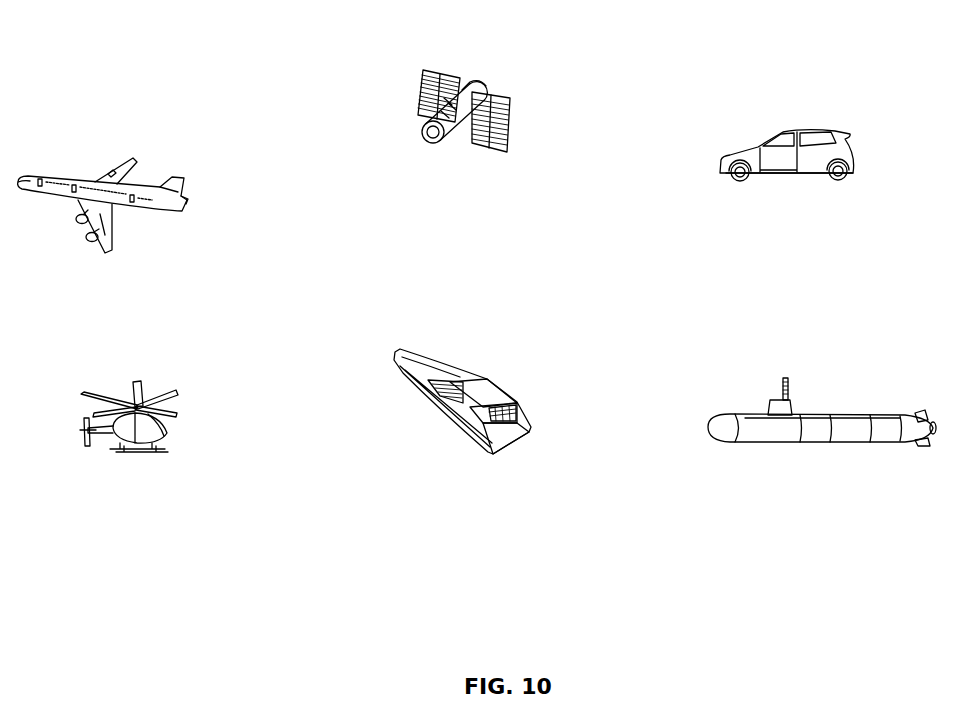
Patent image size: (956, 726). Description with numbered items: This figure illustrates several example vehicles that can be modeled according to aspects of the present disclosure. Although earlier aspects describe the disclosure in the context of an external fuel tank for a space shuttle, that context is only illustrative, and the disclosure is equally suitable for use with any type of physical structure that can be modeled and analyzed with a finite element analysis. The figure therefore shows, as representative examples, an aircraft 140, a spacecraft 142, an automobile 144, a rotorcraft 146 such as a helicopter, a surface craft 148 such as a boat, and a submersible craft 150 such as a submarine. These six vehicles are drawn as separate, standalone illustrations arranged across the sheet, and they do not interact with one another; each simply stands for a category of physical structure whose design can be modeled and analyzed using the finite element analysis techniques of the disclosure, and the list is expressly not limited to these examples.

The aircraft 140 is at (101, 136).
The spacecraft 142 is at (472, 57).
The automobile 144 is at (812, 107).
The rotorcraft 146 is at (155, 373).
The surface craft 148 is at (484, 341).
The submersible craft 150 is at (848, 373).